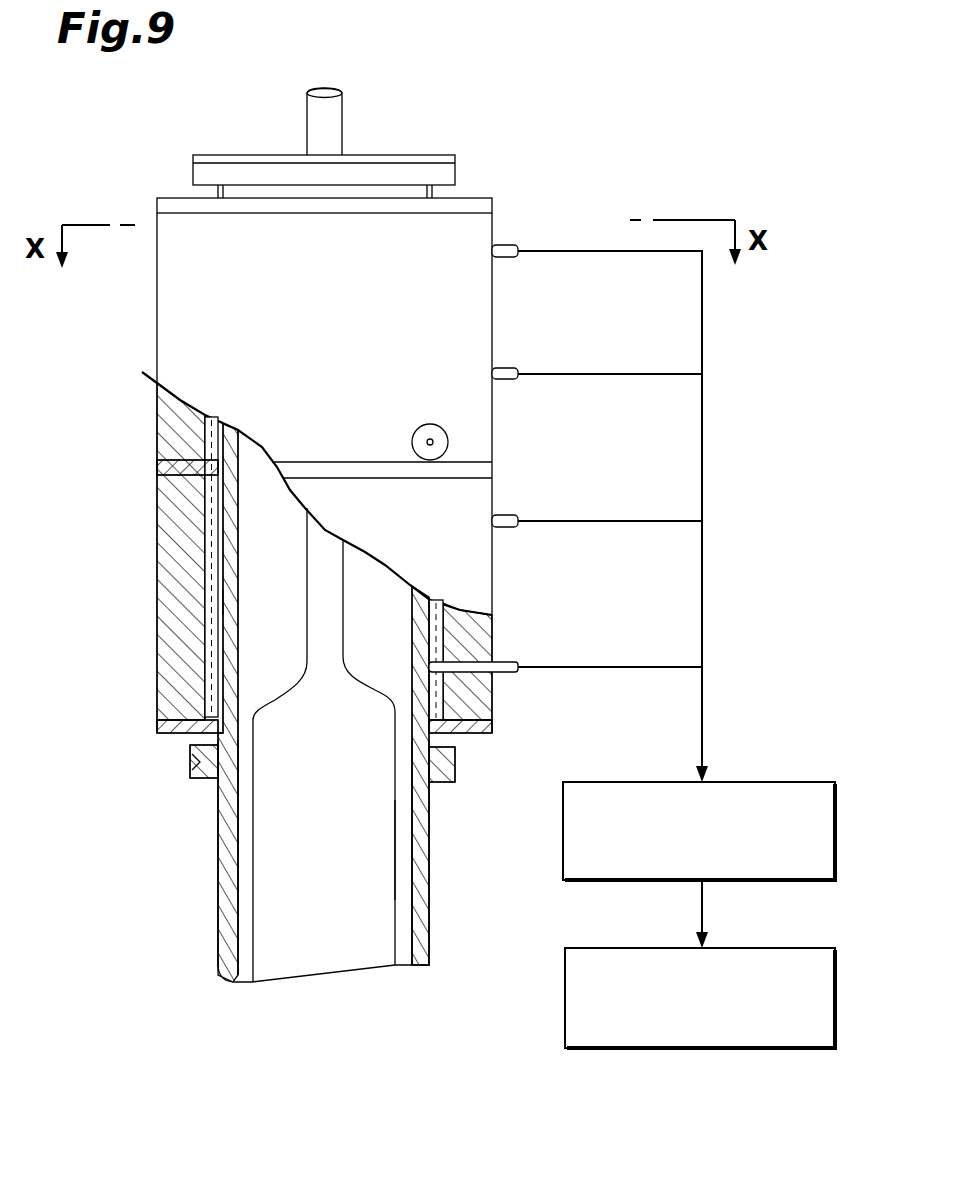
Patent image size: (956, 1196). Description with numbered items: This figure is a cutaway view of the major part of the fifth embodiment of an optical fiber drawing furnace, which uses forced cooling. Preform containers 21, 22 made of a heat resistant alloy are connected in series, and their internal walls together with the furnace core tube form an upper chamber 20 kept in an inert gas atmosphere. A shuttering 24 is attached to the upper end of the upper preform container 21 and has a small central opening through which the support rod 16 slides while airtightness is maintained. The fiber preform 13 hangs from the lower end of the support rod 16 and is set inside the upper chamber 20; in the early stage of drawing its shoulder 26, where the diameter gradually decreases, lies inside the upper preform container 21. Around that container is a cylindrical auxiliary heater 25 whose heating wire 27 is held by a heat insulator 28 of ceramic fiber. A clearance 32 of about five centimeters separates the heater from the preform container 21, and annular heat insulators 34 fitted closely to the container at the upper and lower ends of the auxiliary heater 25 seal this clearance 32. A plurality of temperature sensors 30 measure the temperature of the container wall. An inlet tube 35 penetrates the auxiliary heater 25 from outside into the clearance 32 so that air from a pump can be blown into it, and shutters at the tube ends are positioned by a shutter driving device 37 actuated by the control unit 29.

The fiber preform 13 is at (372, 853).
The support rod 16 is at (335, 132).
The upper chamber 20 is at (252, 517).
The preform container 21 is at (232, 601).
The preform container 22 is at (420, 908).
The shuttering 24 is at (250, 157).
The auxiliary heater 25 is at (178, 303).
The shoulder 26 is at (358, 672).
The heating wire 27 is at (237, 442).
The heat insulator 28 is at (157, 381).
The control unit 29 is at (778, 782).
The temperature sensor 30 is at (510, 247).
The clearance 32 is at (215, 422).
The annular heat insulator 34 is at (170, 205).
The inlet tube 35 is at (430, 442).
The shutter driving device 37 is at (768, 948).